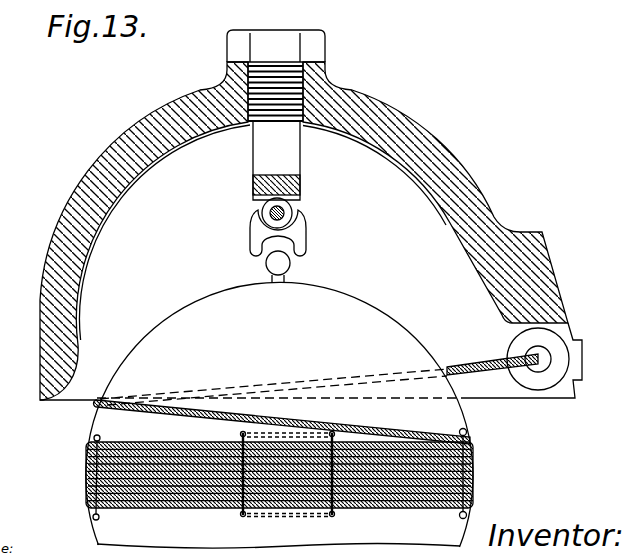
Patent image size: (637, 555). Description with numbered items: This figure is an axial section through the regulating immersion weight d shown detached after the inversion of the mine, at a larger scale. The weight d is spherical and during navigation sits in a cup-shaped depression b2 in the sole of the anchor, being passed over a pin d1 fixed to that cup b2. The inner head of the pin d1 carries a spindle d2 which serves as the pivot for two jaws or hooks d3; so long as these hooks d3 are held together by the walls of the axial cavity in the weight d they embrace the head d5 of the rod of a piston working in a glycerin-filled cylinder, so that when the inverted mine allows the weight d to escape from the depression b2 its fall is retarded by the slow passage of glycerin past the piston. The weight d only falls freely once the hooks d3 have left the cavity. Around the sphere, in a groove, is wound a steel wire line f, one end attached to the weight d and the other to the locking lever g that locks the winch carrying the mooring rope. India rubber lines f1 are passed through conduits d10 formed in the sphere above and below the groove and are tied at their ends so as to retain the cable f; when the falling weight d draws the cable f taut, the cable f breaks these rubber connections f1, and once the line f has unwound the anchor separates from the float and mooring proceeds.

The depression b2 is at (427, 152).
The pin d1 is at (263, 157).
The spindle d2 is at (282, 213).
The jaws or hooks d3 is at (327, 238).
The head of the piston rod d5 is at (280, 265).
The weight d is at (182, 330).
The conduits d10 is at (336, 527).
The line or cable f is at (477, 368).
The india rubber lines f1 is at (500, 470).
The locking lever g is at (567, 370).